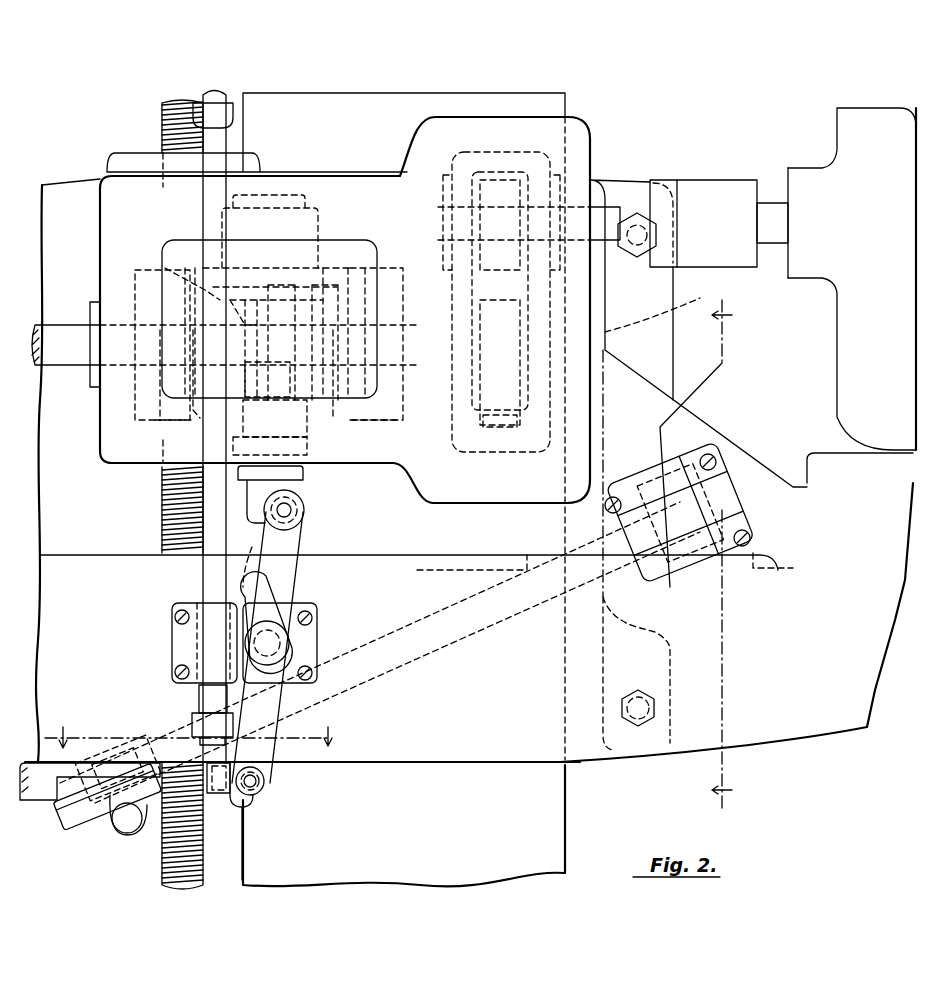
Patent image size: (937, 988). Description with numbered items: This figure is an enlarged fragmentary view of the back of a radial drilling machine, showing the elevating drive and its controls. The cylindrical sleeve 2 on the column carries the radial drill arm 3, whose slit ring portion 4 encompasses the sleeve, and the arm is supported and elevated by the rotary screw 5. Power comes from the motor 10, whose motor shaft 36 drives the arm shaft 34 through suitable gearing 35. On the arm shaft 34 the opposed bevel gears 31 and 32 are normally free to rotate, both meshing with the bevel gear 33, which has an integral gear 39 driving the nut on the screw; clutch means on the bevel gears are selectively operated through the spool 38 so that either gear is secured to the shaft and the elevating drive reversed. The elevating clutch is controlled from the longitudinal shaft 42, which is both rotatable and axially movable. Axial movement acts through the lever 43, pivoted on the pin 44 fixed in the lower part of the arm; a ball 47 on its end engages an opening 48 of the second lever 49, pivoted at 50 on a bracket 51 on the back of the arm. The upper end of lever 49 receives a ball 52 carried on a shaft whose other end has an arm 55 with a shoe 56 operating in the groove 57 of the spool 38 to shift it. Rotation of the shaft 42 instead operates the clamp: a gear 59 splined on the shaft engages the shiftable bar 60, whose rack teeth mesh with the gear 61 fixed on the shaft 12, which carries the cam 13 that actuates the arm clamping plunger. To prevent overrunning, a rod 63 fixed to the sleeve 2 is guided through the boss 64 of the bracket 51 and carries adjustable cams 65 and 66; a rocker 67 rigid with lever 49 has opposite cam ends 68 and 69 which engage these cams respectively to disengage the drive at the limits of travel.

The cylindrical sleeve 2 is at (565, 103).
The radial drill arm 3 is at (42, 458).
The slit ring portion 4 is at (722, 554).
The rotary screw 5 is at (162, 510).
The motor 10 is at (852, 279).
The shaft 12 is at (468, 636).
The cam 13 is at (658, 468).
The bevel gear 31 is at (375, 270).
The bevel gear 32 is at (170, 268).
The bevel gear 33 is at (268, 268).
The arm shaft 34 is at (38, 325).
The gearing 35 is at (503, 268).
The motor shaft 36 is at (769, 200).
The spool 38 is at (322, 290).
The gear 39 is at (281, 290).
The shaft 42 is at (37, 795).
The lever 43 is at (222, 796).
The pin 44 is at (250, 808).
The ball 47 is at (257, 785).
The opening 48 is at (272, 780).
The second lever 49 is at (295, 544).
The pivot 50 is at (272, 640).
The bracket 51 is at (310, 653).
The ball 52 is at (292, 513).
The arm 55 is at (302, 422).
The shoe 56 is at (294, 400).
The groove 57 is at (265, 282).
The gear 59 is at (100, 812).
The shiftable bar 60 is at (127, 833).
The gear 61 is at (108, 745).
The rod 63 is at (205, 580).
The boss 64 is at (197, 650).
The cam 65 is at (236, 113).
The cam 66 is at (192, 722).
The rocker 67 is at (275, 597).
The cam end 68 is at (242, 560).
The cam end 69 is at (205, 694).